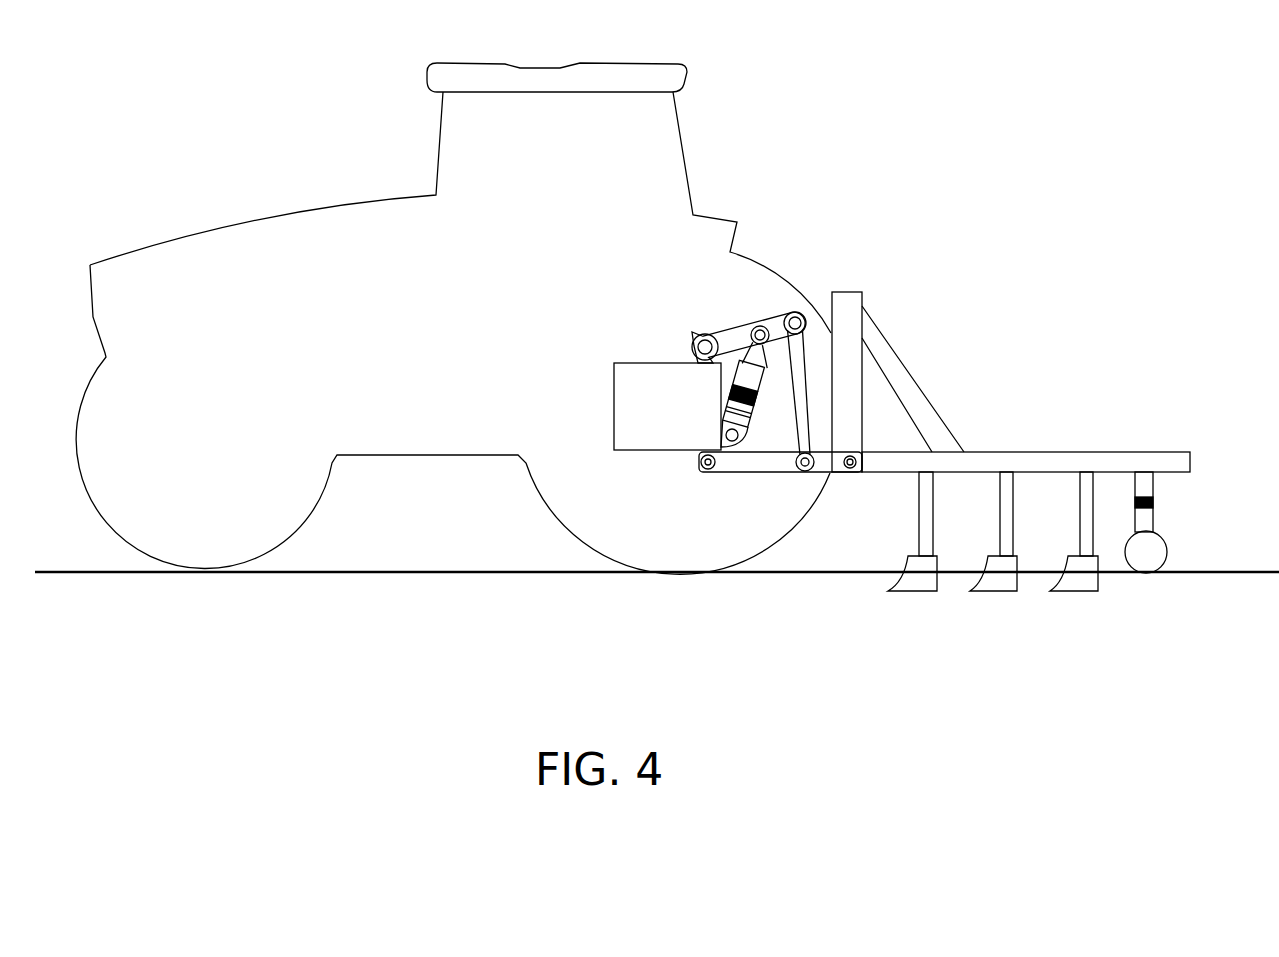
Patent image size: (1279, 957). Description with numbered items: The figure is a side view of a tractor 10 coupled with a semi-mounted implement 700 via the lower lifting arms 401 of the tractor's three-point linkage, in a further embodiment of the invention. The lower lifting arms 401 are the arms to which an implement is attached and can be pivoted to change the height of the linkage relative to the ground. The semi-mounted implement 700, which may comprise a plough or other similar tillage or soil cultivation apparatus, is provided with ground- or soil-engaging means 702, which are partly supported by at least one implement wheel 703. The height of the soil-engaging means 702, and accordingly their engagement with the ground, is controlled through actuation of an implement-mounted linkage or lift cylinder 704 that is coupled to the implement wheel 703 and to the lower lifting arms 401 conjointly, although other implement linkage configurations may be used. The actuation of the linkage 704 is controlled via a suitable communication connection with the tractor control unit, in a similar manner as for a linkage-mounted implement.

The tractor 10 is at (255, 135).
The lower lifting arms 401 is at (788, 463).
The semi-mounted implement 700 is at (1035, 460).
The soil-engaging means 702 is at (1007, 580).
The implement wheel 703 is at (1147, 562).
The implement-mounted linkage or lift cylinder 704 is at (1153, 502).